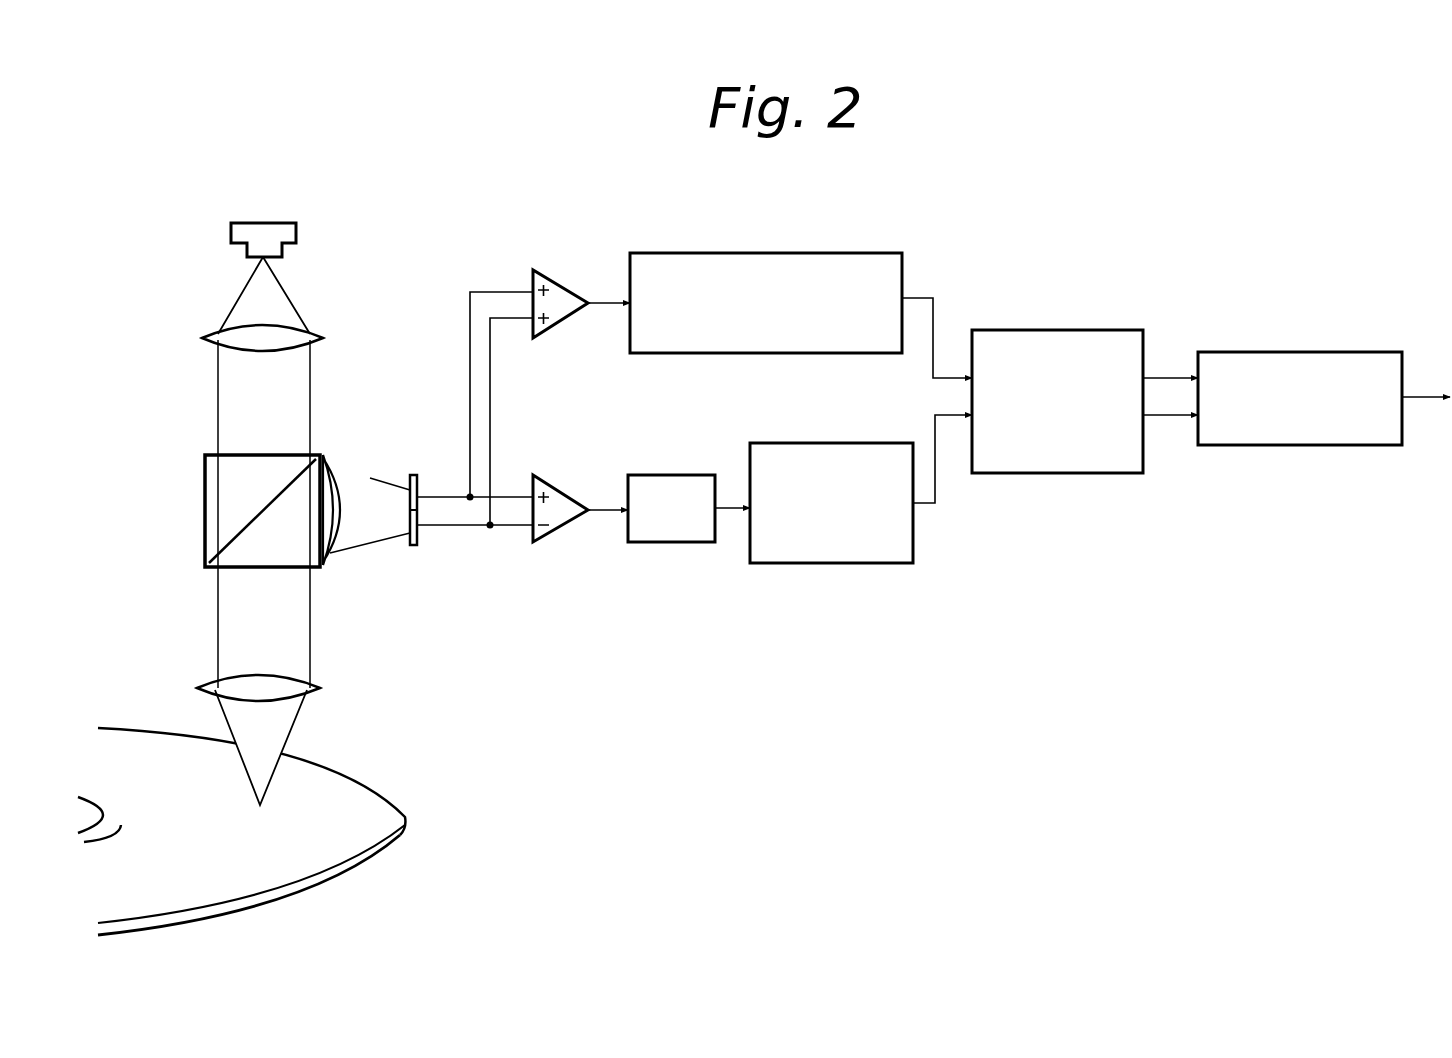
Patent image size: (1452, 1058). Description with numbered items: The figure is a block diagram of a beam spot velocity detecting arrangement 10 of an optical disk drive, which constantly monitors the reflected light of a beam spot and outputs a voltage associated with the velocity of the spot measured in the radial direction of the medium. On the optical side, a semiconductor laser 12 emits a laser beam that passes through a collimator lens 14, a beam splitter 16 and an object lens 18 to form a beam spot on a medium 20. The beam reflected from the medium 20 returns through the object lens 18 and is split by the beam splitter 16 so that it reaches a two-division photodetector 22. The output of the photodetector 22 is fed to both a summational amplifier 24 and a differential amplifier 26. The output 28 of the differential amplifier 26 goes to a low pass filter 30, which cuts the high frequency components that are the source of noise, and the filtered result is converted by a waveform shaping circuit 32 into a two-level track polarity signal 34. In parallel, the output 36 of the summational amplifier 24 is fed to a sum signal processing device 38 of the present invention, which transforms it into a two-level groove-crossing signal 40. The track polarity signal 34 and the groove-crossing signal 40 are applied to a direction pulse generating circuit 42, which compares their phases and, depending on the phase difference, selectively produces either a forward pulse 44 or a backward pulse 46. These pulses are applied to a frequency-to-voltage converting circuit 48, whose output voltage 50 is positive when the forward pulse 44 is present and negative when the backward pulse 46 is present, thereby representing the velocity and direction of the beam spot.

The beam spot velocity detecting arrangement 10 is at (1056, 216).
The semiconductor laser 12 is at (297, 232).
The collimator lens 14 is at (323, 338).
The beam splitter 16 is at (289, 455).
The object lens 18 is at (320, 688).
The medium 20 is at (385, 800).
The 2D-PD 22 is at (417, 545).
The summational amplifier 24 is at (553, 280).
The differential amplifier 26 is at (555, 485).
The output of the differential amplifier 28 is at (600, 513).
The low pass filter 30 is at (672, 475).
The waveform shaping circuit 32 is at (853, 443).
The track polarity signal 34 is at (930, 505).
The output of the summational amplifier 36 is at (600, 306).
The sum signal processing device 38 is at (790, 253).
The groove-crossing signal 40 is at (930, 298).
The direction pulse generating circuit 42 is at (1070, 330).
The forward pulse 44 is at (1168, 378).
The backward pulse 46 is at (1172, 417).
The frequency-to-voltage converting circuit 48 is at (1305, 352).
The output voltage 50 is at (1420, 400).